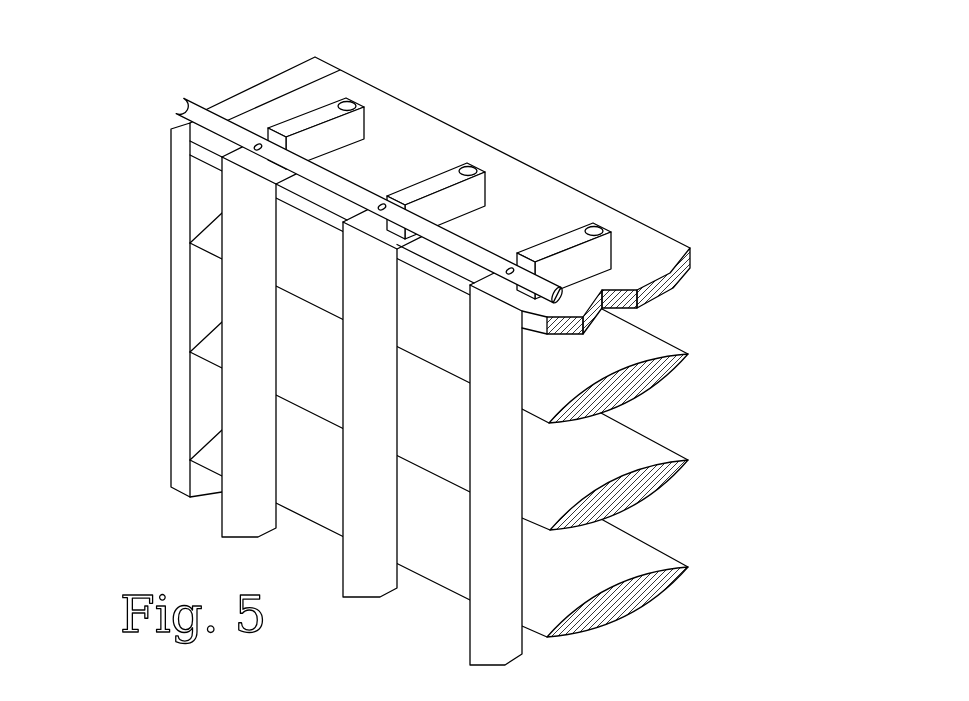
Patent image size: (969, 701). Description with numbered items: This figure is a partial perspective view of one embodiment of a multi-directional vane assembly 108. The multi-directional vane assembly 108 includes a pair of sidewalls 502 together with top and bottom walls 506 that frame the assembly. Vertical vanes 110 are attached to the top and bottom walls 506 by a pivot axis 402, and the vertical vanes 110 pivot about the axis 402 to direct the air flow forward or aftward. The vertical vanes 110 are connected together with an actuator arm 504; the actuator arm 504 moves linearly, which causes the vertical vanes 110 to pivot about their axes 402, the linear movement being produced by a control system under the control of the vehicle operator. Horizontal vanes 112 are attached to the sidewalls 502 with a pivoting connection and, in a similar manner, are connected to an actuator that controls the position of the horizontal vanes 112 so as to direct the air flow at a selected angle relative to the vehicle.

The multi-directional vane assembly 108 is at (443, 361).
The vertical vanes 110 is at (388, 198).
The horizontal vanes 112 is at (656, 380).
The pivot axis 402 is at (619, 225).
The sidewalls 502 is at (170, 230).
The actuator arm 504 is at (171, 108).
The top and bottom walls 506 is at (493, 147).